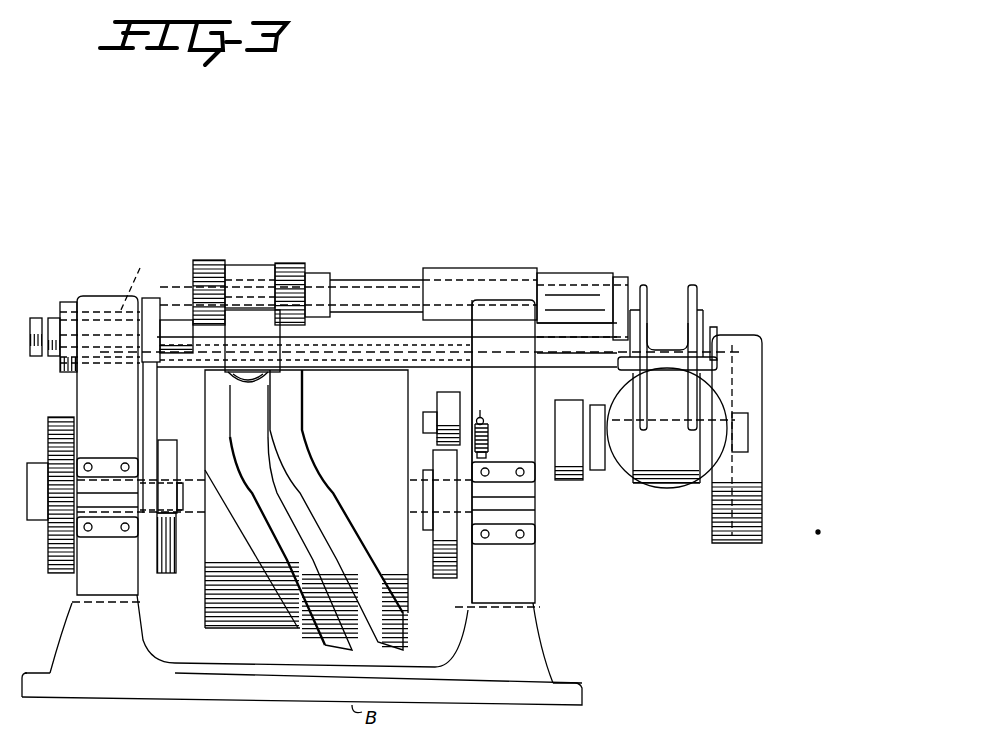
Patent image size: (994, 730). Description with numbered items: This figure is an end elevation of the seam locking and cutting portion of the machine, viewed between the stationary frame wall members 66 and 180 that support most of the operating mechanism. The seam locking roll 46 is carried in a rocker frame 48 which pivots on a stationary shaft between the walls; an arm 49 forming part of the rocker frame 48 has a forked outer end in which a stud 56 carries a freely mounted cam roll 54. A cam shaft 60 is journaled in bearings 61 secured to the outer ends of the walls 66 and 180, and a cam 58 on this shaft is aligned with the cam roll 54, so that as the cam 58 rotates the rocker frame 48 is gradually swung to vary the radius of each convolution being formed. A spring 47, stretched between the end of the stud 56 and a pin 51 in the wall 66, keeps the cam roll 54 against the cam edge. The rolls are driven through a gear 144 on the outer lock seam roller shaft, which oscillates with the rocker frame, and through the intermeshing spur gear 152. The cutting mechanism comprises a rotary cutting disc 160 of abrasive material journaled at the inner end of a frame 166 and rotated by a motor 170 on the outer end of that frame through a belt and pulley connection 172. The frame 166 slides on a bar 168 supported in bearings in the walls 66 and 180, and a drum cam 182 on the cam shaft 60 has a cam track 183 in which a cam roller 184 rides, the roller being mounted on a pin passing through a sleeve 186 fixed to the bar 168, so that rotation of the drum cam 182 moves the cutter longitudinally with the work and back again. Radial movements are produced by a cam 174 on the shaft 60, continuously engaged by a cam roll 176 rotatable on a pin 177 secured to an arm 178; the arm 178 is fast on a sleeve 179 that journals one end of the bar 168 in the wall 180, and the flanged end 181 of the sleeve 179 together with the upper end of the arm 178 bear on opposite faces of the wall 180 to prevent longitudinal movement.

The seam locking roll 46 is at (592, 290).
The spring 47 is at (489, 442).
The rocker frame 48 is at (476, 264).
The arm 49 is at (456, 386).
The pin 51 is at (486, 457).
The cam roll 54 is at (455, 407).
The stud 56 is at (486, 421).
The cam 58 is at (450, 578).
The cam shaft 60 is at (200, 513).
The bearings 61 is at (104, 470).
The wall member 66 is at (530, 580).
The gear 144 is at (226, 256).
The spur gear 152 is at (308, 284).
The rotary cutting disc 160 is at (735, 392).
The frame 166 is at (697, 300).
The bar 168 is at (716, 342).
The motor 170 is at (652, 500).
The belt and pulley connection 172 is at (570, 480).
The cam 174 is at (166, 575).
The cam roll 176 is at (190, 440).
The pin 177 is at (182, 495).
The arm 178 is at (150, 388).
The sleeve 179 is at (140, 281).
The wall member 180 is at (118, 284).
The flanged end 181 is at (72, 300).
The drum cam 182 is at (322, 650).
The cam track 183 is at (380, 644).
The cam roller 184 is at (253, 385).
The sleeve 186 is at (283, 380).